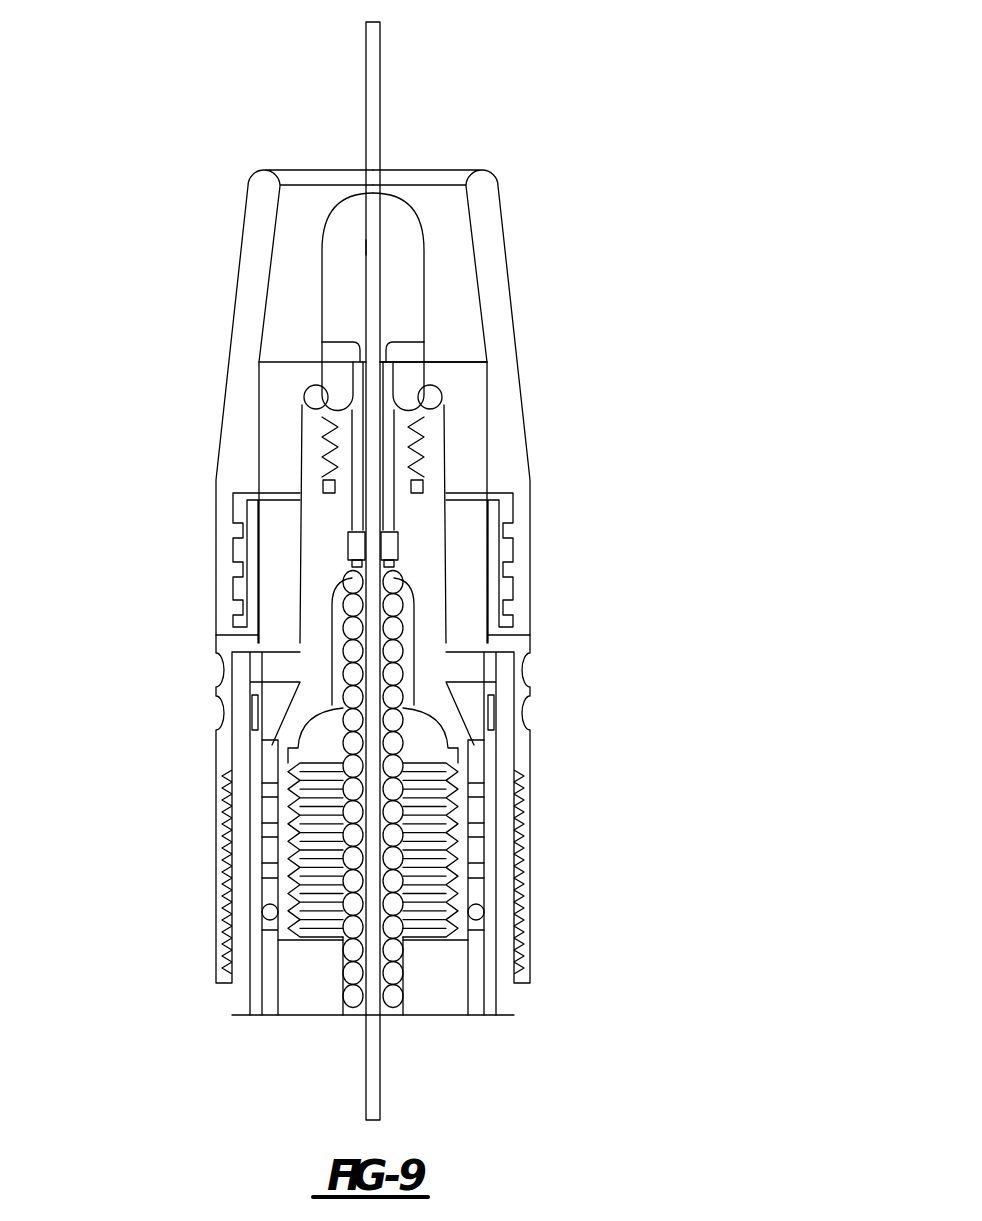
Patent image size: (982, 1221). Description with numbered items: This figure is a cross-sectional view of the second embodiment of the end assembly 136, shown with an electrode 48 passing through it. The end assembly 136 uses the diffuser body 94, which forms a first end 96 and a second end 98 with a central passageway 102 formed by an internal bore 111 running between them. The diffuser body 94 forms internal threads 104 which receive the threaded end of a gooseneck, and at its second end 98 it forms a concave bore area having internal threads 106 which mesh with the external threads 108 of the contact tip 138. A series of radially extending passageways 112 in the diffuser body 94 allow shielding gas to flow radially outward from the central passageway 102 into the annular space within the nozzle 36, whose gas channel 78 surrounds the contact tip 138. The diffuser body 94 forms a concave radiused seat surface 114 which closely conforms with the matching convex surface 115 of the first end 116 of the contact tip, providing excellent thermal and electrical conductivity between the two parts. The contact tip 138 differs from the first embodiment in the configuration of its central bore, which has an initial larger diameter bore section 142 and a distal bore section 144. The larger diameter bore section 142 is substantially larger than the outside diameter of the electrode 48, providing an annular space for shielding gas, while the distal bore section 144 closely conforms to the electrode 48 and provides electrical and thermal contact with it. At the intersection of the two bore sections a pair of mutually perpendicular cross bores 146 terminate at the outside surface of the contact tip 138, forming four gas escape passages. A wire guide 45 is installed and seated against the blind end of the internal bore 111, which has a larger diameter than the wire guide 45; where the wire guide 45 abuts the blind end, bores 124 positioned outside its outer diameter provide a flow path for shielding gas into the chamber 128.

The electrode 48 is at (385, 80).
The end assembly 136 is at (603, 145).
The distal bore section 144 is at (372, 252).
The cross bores 146 is at (322, 340).
The second end 98 is at (318, 383).
The larger diameter bore section 142 is at (300, 403).
The external threads 108 is at (328, 460).
The concave radiused seat surface 114 is at (328, 480).
The first end of contact tip 116 is at (347, 533).
The chamber 128 is at (356, 552).
The contact tip 138 is at (425, 246).
The nozzle 36 is at (495, 290).
The gas channel 78 is at (456, 336).
The internal threads 106 is at (418, 452).
The diffuser body 94 is at (447, 466).
The convex surface 115 is at (398, 515).
The bores 124 is at (418, 567).
The internal bore 111 is at (395, 625).
The radially extending passageways 112 is at (462, 680).
The central passageway 102 is at (430, 806).
The internal threads 104 is at (430, 862).
The wire guide 45 is at (345, 948).
The first end 96 is at (438, 995).